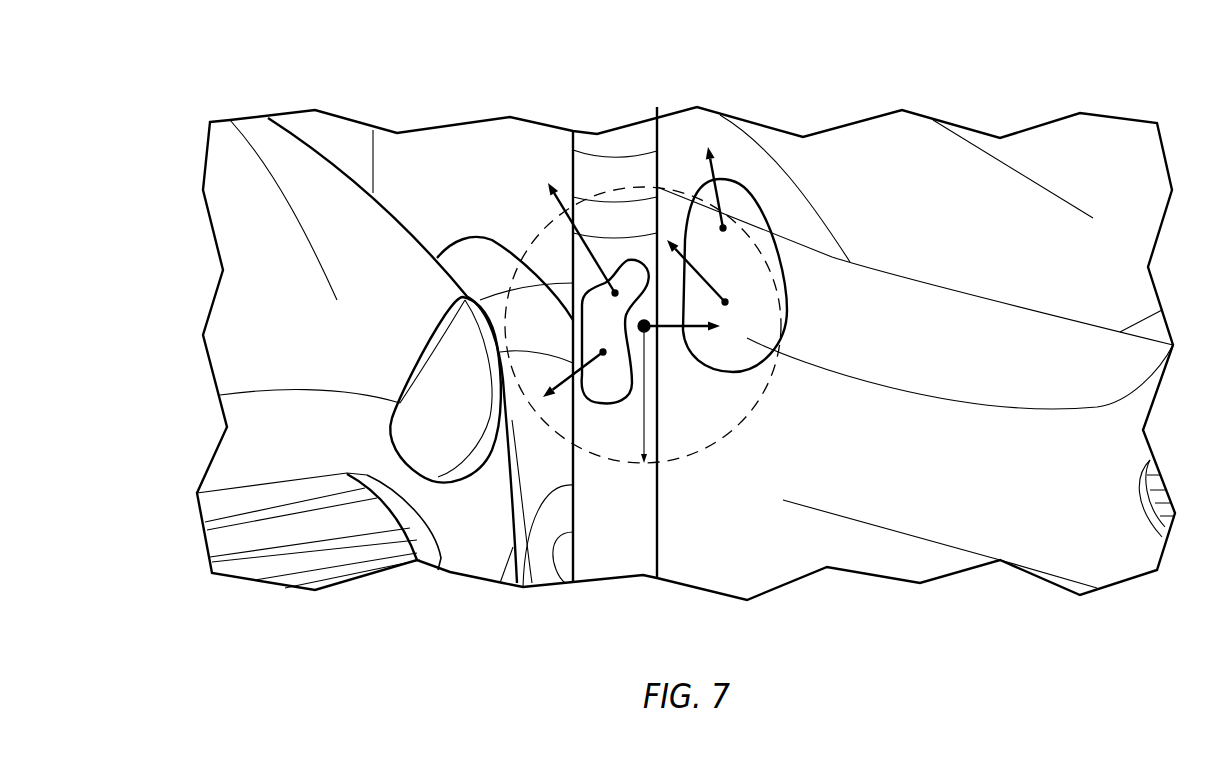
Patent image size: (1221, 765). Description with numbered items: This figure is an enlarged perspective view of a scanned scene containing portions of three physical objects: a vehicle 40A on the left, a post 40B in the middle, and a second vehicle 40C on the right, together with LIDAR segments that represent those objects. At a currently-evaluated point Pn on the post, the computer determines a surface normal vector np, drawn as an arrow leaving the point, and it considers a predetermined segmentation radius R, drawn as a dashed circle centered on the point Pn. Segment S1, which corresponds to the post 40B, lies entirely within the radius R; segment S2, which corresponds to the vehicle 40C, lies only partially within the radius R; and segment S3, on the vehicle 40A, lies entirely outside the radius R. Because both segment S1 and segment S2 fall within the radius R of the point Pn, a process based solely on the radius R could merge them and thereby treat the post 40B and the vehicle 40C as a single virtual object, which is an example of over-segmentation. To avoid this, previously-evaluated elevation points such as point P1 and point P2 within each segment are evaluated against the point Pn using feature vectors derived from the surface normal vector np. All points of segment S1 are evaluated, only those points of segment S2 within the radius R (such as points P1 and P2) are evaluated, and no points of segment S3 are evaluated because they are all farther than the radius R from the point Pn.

The vehicle 40A is at (243, 103).
The post 40B is at (597, 110).
The vehicle 40C is at (968, 103).
The segment S1 is at (623, 403).
The segment S2 is at (746, 189).
The segment S3 is at (438, 306).
The point P1 is at (642, 236).
The point P2 is at (646, 318).
The currently-evaluated point Pn is at (658, 330).
The surface normal vector np is at (741, 334).
The radius R is at (643, 425).